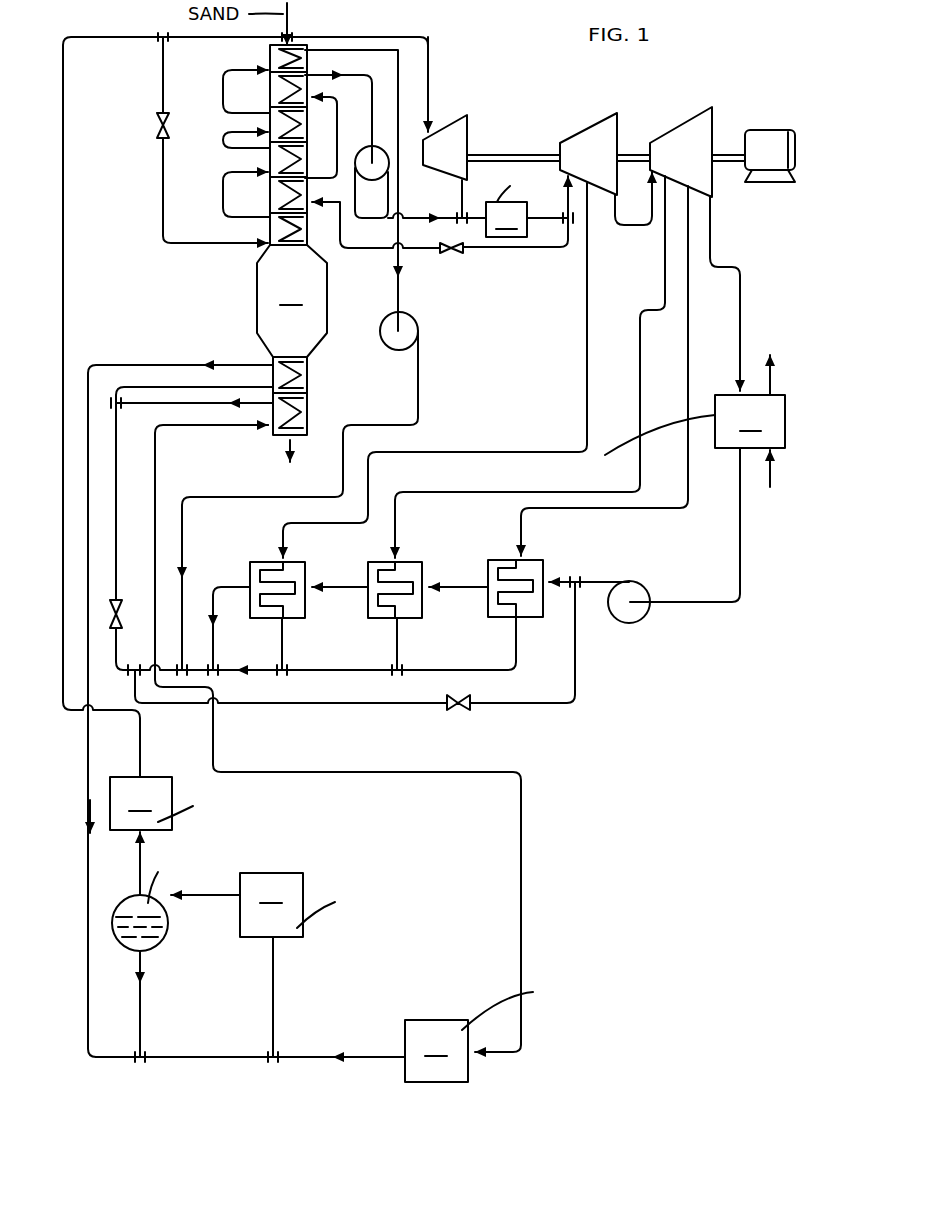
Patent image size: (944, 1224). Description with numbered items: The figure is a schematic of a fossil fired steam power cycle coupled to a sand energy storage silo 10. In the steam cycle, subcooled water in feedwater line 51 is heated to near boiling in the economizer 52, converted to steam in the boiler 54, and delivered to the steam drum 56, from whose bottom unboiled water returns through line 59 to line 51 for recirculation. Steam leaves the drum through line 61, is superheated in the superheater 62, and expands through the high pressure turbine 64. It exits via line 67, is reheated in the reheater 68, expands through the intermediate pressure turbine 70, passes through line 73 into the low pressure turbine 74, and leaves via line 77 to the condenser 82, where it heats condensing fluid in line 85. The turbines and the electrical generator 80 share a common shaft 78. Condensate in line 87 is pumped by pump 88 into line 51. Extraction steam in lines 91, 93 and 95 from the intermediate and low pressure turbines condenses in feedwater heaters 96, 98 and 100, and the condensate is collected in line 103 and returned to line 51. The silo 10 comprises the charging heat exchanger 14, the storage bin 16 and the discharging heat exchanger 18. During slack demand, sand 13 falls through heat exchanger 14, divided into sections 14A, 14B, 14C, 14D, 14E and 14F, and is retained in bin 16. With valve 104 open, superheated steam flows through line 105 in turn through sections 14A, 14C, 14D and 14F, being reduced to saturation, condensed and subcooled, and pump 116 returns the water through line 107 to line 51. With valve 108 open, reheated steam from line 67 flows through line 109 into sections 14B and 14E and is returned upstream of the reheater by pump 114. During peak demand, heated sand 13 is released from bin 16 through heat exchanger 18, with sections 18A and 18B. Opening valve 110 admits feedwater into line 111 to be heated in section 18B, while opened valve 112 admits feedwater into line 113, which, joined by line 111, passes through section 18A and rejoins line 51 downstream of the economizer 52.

The silo 10 is at (248, 253).
The sand 13 is at (289, 27).
The charging heat exchanger 14 is at (296, 128).
The heat exchanger section 14A is at (270, 228).
The heat exchanger section 14B is at (270, 195).
The heat exchanger section 14C is at (270, 157).
The heat exchanger section 14D is at (270, 125).
The heat exchanger section 14E is at (270, 100).
The heat exchanger section 14F is at (270, 50).
The storage bin 16 is at (292, 301).
The discharging heat exchanger 18 is at (290, 394).
The heat exchanger section 18A is at (305, 382).
The heat exchanger section 18B is at (305, 420).
The feedwater line 51 is at (213, 590).
The economizer 52 is at (531, 1032).
The boiler 54 is at (320, 905).
The steam drum 56 is at (168, 925).
The line 59 is at (143, 1023).
The line 61 is at (64, 320).
The superheater 62 is at (216, 803).
The high pressure turbine 64 is at (453, 130).
The line 67 is at (463, 195).
The reheater 68 is at (522, 202).
The intermediate pressure turbine 70 is at (590, 140).
The line 73 is at (640, 230).
The low pressure turbine 74 is at (678, 140).
The line 77 is at (710, 257).
The shaft 78 is at (530, 152).
The electrical generator 80 is at (778, 140).
The condenser 82 is at (640, 441).
The condensing fluid line 85 is at (772, 370).
The line 87 is at (700, 605).
The pump 88 is at (628, 617).
The extraction steam line 91 is at (587, 397).
The extraction steam line 93 is at (665, 265).
The extraction steam line 95 is at (688, 353).
The feedwater heater 96 is at (258, 577).
The feedwater heater 98 is at (412, 567).
The feedwater heater 100 is at (538, 567).
The line 103 is at (313, 670).
The valve 104 is at (160, 122).
The line 105 is at (163, 195).
The line 107 is at (268, 490).
The valve 108 is at (456, 253).
The line 109 is at (418, 217).
The valve 110 is at (468, 706).
The line 111 is at (355, 705).
The valve 112 is at (142, 588).
The line 113 is at (163, 364).
The pump 114 is at (377, 172).
The pump 116 is at (416, 328).